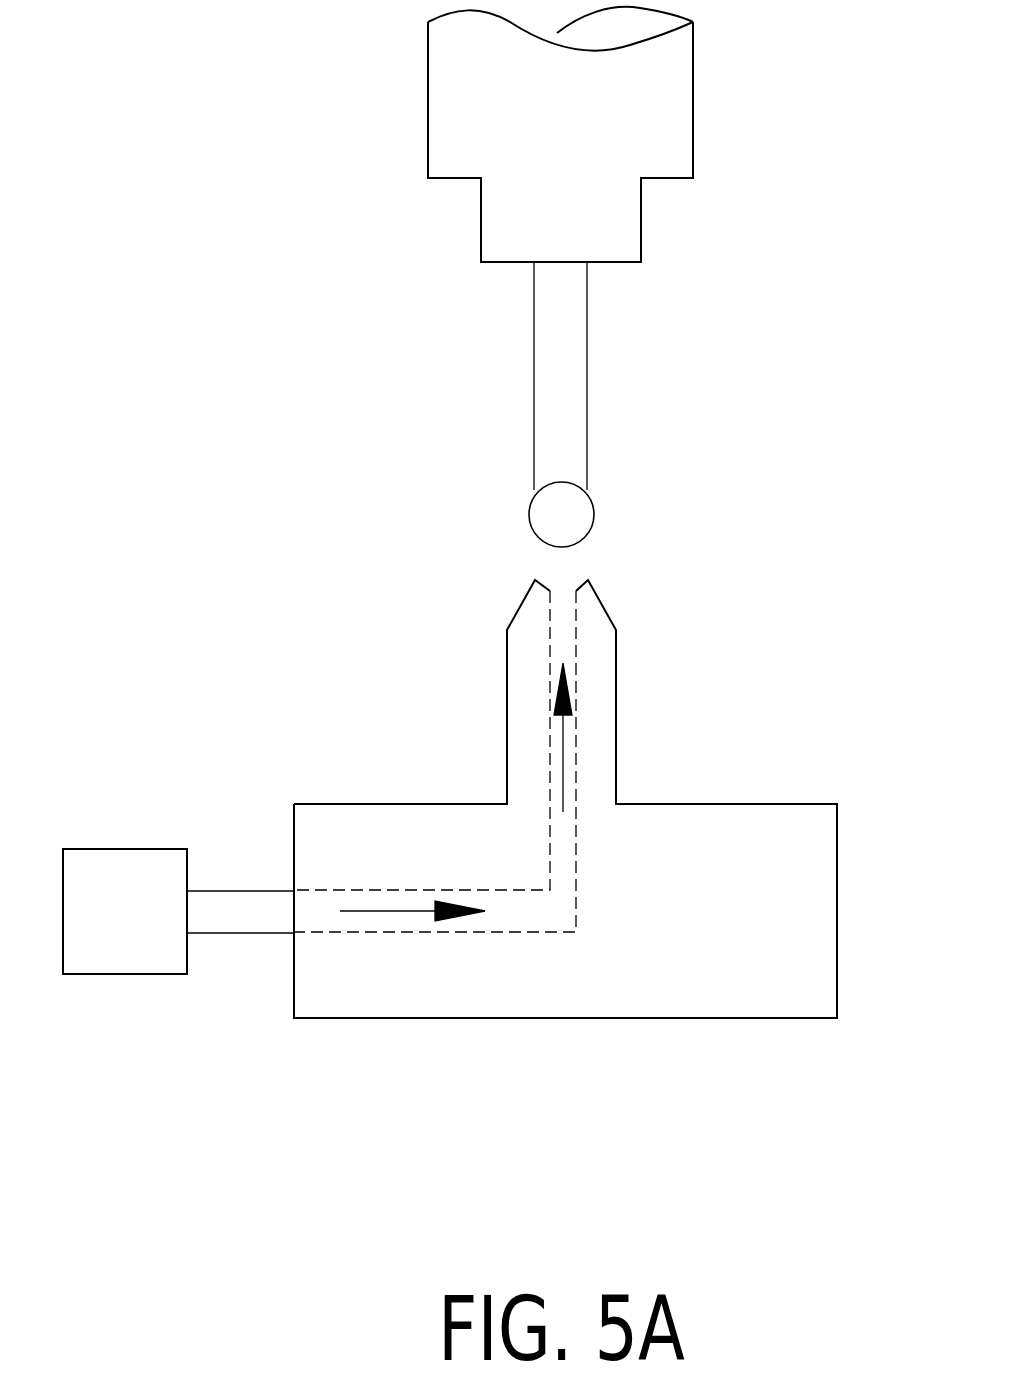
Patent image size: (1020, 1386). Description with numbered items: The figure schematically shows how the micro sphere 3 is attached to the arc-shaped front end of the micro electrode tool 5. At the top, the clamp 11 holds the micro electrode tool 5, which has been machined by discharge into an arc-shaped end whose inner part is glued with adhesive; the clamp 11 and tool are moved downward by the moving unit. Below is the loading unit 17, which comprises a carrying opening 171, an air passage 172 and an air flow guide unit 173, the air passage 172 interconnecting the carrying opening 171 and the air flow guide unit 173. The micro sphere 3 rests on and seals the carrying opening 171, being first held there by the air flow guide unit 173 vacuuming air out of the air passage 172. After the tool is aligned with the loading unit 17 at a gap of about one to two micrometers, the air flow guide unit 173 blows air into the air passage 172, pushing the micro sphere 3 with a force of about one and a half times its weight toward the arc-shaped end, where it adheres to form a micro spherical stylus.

The clamp 11 is at (587, 153).
The micro electrode tool 5 is at (556, 353).
The micro sphere 3 is at (556, 508).
The loading unit 17 is at (450, 838).
The carrying opening 171 is at (602, 605).
The air passage 172 is at (518, 915).
The air flow guide unit 173 is at (102, 947).